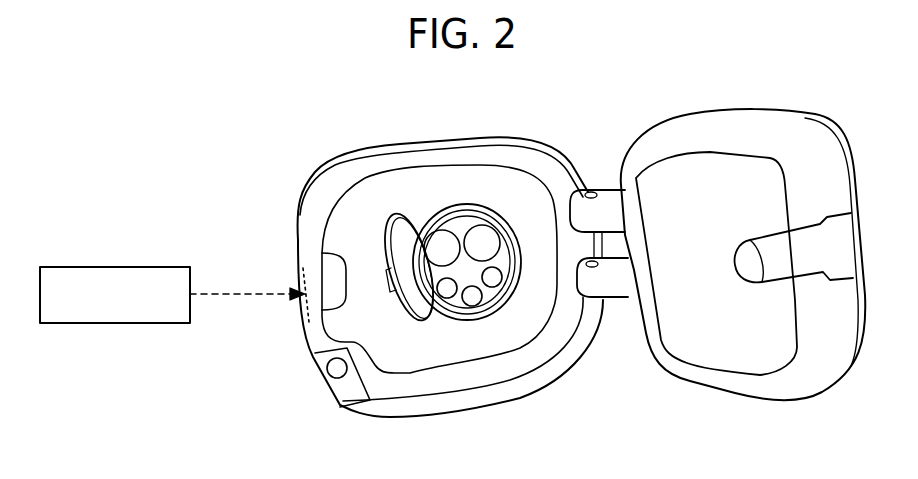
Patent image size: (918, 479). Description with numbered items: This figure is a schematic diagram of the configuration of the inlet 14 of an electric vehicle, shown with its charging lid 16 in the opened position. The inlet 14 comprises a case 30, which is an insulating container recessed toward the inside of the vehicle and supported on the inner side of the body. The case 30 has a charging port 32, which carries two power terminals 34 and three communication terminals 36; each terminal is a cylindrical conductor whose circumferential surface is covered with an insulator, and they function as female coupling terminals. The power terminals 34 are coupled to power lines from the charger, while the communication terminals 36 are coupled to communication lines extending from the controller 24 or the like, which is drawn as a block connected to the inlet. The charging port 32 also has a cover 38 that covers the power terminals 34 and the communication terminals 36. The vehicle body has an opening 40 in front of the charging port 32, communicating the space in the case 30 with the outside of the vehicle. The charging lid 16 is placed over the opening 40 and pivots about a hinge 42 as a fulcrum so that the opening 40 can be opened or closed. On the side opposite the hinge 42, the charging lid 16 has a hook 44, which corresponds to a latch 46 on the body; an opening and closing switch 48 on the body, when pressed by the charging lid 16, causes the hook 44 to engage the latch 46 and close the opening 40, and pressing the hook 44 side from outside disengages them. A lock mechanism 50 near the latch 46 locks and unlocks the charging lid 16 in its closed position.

The inlet 14 is at (524, 103).
The charging lid 16 is at (720, 108).
The controller 24 is at (170, 248).
The case 30 is at (408, 373).
The charging port 32 is at (454, 204).
The power terminals 34 is at (477, 217).
The communication terminals 36 is at (462, 307).
The cover 38 is at (390, 234).
The opening 40 is at (498, 400).
The hinge 42 is at (605, 190).
The hook 44 is at (761, 240).
The latch 46 is at (322, 257).
The opening and closing switch 48 is at (331, 380).
The lock mechanism 50 is at (307, 328).